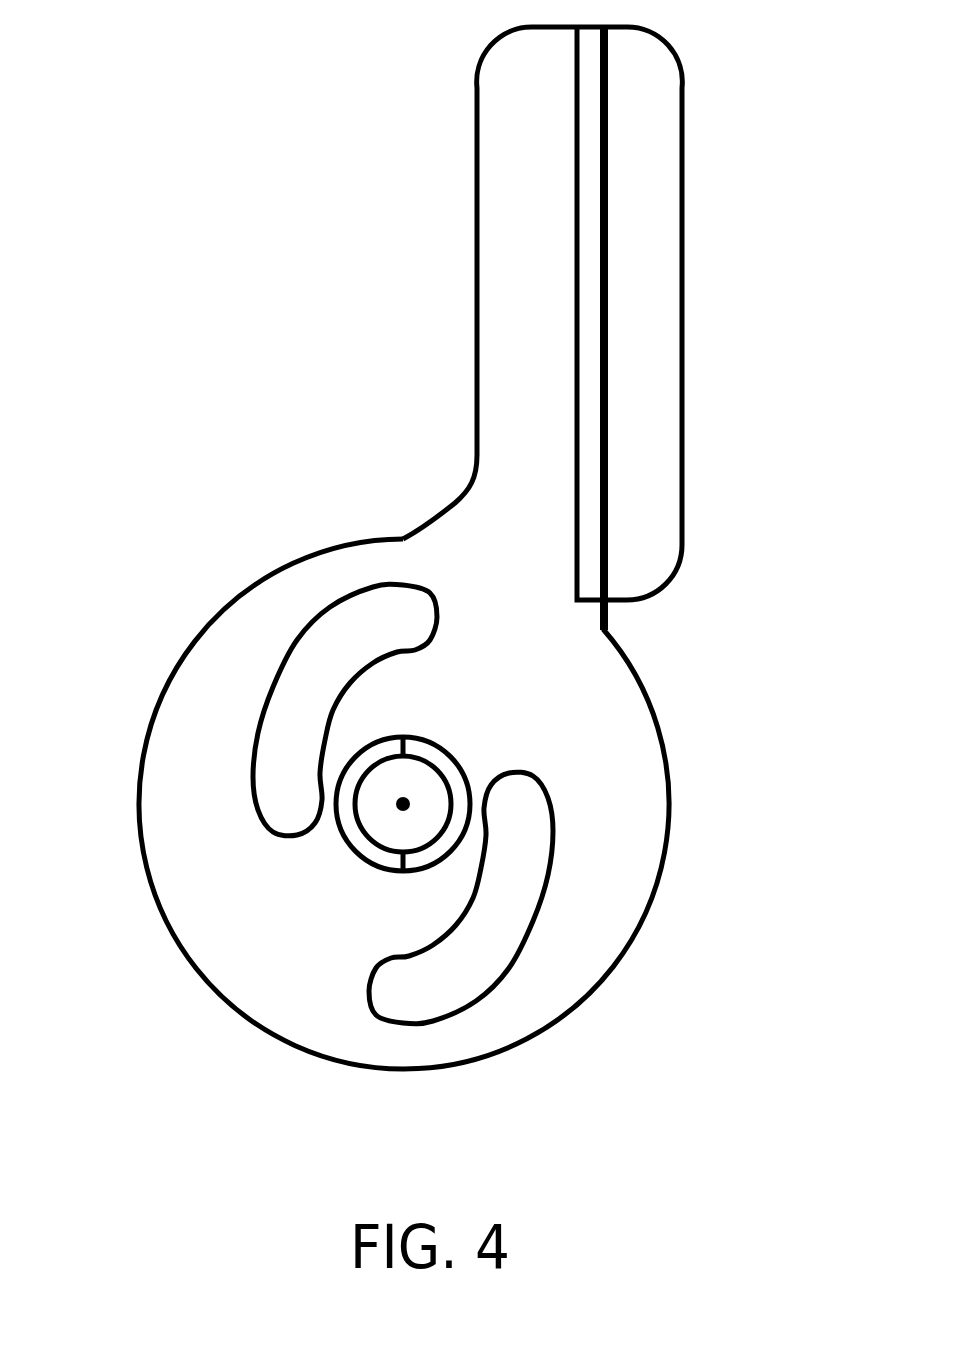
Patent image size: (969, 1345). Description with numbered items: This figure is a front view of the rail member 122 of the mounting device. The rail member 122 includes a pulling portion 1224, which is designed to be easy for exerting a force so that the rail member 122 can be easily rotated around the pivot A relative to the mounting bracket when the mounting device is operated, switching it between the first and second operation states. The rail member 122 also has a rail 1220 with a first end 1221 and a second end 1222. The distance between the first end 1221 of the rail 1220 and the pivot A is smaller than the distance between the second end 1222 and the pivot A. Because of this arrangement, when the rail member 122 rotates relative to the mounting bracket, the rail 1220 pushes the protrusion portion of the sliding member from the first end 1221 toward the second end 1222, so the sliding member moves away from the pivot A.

The rail member 122 is at (238, 308).
The rail 1220 is at (292, 647).
The first end 1221 is at (508, 773).
The second end 1222 is at (424, 588).
The pulling portion 1224 is at (683, 290).
The pivot A is at (405, 802).